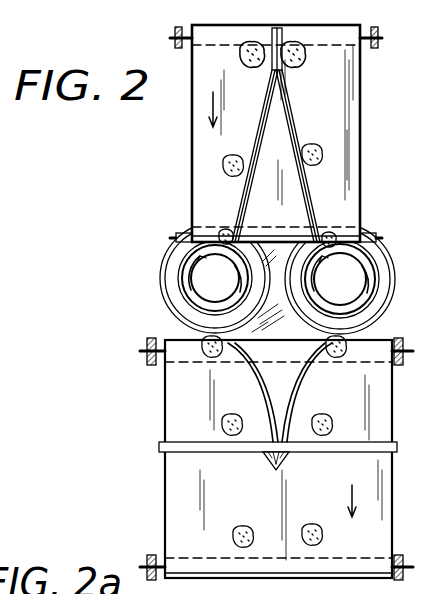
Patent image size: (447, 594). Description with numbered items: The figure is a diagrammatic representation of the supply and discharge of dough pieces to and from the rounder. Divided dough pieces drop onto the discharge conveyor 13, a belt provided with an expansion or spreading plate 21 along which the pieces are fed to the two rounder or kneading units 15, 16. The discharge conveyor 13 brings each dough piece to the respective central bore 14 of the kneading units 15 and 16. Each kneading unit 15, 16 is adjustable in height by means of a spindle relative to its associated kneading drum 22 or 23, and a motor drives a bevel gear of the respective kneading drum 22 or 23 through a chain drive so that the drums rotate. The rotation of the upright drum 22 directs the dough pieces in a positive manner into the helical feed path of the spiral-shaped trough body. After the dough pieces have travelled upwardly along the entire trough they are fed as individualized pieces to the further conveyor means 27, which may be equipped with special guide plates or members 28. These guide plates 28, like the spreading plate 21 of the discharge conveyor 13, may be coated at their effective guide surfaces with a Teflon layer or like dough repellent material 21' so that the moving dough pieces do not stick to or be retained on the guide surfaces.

The discharge conveyor 13 is at (352, 72).
The spreading plate 21 is at (272, 135).
The dough repellent material 21' is at (272, 156).
The central bore 14 is at (207, 262).
The kneading unit 15 is at (180, 276).
The kneading unit 16 is at (370, 284).
The kneading drum 22 is at (163, 302).
The kneading drum 23 is at (393, 306).
The guide plate 28 is at (293, 400).
The further conveyor means 27 is at (166, 480).